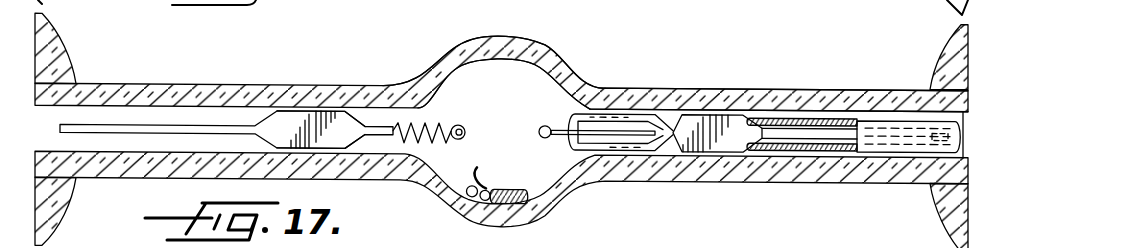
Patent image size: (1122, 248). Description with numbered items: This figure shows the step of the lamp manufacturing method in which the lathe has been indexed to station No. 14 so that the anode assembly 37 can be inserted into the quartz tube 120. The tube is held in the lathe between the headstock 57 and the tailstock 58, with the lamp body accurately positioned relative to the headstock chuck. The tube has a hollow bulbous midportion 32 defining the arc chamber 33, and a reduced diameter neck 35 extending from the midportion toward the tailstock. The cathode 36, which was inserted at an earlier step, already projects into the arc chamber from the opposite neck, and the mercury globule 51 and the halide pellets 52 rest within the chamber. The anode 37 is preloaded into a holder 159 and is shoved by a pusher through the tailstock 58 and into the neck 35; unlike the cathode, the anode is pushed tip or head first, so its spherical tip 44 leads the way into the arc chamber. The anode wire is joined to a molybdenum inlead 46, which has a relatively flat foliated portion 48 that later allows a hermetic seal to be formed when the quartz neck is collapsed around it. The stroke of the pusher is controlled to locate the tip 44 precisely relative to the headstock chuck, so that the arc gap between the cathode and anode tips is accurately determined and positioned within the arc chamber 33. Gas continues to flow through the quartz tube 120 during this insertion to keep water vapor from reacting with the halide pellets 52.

The station No. 14 is at (620, 231).
The hollow bulbous midportion 32 is at (468, 41).
The arc chamber 33 is at (497, 104).
The tubular neck portion 35 is at (731, 88).
The electrode-inlead assembly (cathode) 36 is at (376, 117).
The electrode-inlead assembly (anode) 37 is at (645, 127).
The tip 44 is at (546, 122).
The molybdenum inlead wire 46 is at (783, 116).
The foliated portion 48 is at (687, 118).
The globule 51 is at (512, 187).
The pellets 52 is at (474, 170).
The headstock 57 is at (66, 40).
The tailstock 58 is at (950, 36).
The quartz tube 120 is at (245, 83).
The holder 159 is at (835, 120).